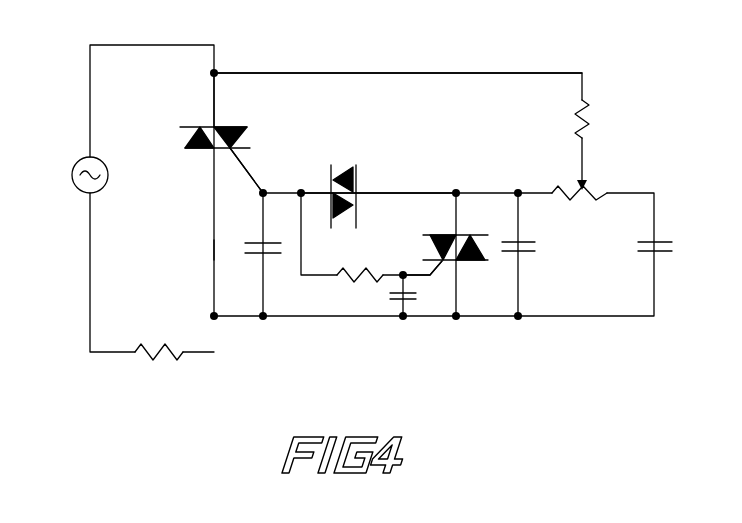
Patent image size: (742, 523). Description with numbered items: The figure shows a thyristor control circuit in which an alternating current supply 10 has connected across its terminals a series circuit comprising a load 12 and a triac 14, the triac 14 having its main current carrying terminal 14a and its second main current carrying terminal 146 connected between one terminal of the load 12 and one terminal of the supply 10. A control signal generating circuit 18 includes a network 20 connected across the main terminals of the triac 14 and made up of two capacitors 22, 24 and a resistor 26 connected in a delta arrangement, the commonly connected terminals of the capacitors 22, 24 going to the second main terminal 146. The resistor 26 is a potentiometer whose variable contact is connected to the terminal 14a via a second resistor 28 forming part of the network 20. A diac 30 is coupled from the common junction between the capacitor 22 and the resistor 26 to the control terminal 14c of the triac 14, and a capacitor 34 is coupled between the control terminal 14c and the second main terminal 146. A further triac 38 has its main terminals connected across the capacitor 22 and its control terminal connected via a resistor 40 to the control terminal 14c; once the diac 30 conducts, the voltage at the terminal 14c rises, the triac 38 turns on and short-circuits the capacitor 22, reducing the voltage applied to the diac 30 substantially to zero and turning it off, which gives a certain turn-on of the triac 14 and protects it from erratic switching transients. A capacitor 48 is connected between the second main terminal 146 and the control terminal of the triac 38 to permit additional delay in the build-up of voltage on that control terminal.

The alternating current supply 10 is at (106, 178).
The load 12 is at (178, 346).
The triac 14 is at (221, 113).
The main current carrying terminal 14a is at (214, 93).
The control terminal 14c is at (248, 172).
The second main terminal conductor 146 is at (214, 248).
The control signal generating circuit 18 is at (398, 52).
The network 20 is at (522, 130).
The capacitor 22 is at (528, 254).
The capacitor 24 is at (660, 254).
The resistor 26 is at (588, 192).
The second resistor 28 is at (585, 116).
The diac 30 is at (346, 165).
The capacitor 34 is at (255, 256).
The further triac 38 is at (446, 262).
The resistor 40 is at (357, 270).
The capacitor 48 is at (390, 297).